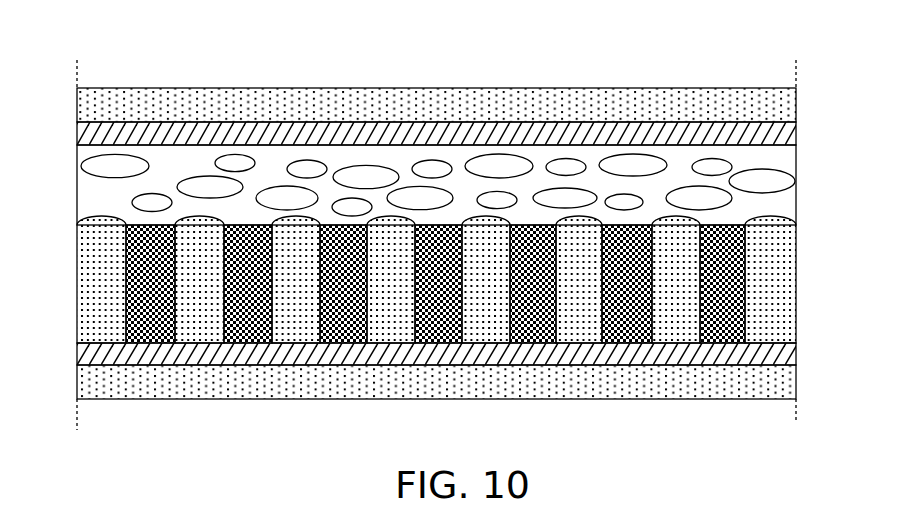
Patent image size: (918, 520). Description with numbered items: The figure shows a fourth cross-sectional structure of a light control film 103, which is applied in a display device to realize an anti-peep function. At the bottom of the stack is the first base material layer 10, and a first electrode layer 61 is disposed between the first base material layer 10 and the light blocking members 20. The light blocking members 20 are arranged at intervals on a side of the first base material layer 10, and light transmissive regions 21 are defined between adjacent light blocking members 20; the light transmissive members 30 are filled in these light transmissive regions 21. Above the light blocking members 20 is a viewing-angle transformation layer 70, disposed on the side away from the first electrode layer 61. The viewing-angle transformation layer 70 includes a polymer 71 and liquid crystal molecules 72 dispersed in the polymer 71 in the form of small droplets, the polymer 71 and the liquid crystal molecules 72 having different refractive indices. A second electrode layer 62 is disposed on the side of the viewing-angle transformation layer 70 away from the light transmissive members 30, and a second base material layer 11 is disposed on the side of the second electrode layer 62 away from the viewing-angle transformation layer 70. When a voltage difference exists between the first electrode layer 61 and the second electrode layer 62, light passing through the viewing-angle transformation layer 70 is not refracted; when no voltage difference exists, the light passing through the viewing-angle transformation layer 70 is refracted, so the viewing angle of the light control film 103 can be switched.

The light control film 103 is at (188, 61).
The first base material layer 10 is at (759, 392).
The second base material layer 11 is at (755, 109).
The light blocking members 20 is at (745, 259).
The light transmissive regions 21 is at (676, 321).
The light transmissive members 30 is at (465, 319).
The first electrode layer 61 is at (755, 357).
The second electrode layer 62 is at (759, 133).
The viewing-angle transformation layer 70 is at (481, 183).
The polymer 71 is at (750, 162).
The liquid crystal molecules 72 is at (754, 186).